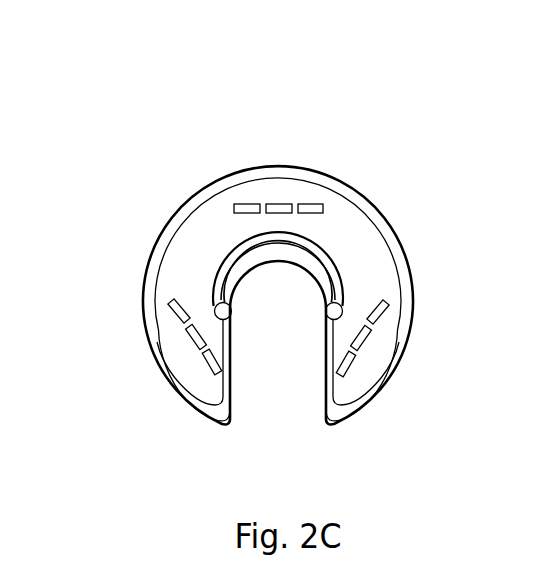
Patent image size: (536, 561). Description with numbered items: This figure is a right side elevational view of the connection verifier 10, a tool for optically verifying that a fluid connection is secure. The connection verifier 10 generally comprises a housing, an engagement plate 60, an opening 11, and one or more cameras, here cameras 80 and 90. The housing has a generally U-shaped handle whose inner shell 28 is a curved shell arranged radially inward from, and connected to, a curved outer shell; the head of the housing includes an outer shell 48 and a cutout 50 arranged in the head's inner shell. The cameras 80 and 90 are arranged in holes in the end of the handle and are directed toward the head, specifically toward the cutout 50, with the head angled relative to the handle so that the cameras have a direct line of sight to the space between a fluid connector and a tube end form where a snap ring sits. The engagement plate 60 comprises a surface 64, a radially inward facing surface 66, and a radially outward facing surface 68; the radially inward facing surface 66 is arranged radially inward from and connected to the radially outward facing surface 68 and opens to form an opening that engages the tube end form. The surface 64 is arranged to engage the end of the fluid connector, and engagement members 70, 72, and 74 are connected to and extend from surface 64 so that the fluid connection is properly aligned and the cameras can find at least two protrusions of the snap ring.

The connection verifier 10 is at (112, 54).
The opening 11 is at (278, 402).
The inner shell 28 is at (285, 256).
The outer shell 48 is at (198, 412).
The cutout 50 is at (341, 258).
The engagement plate 60 is at (188, 240).
The surface 64 is at (204, 222).
The radially inward facing surface 66 is at (246, 249).
The radially outward facing surface 68 is at (352, 182).
The engagement member 70 is at (382, 352).
The engagement member 72 is at (276, 186).
The engagement member 74 is at (177, 350).
The camera 80 is at (345, 307).
The camera 90 is at (217, 304).